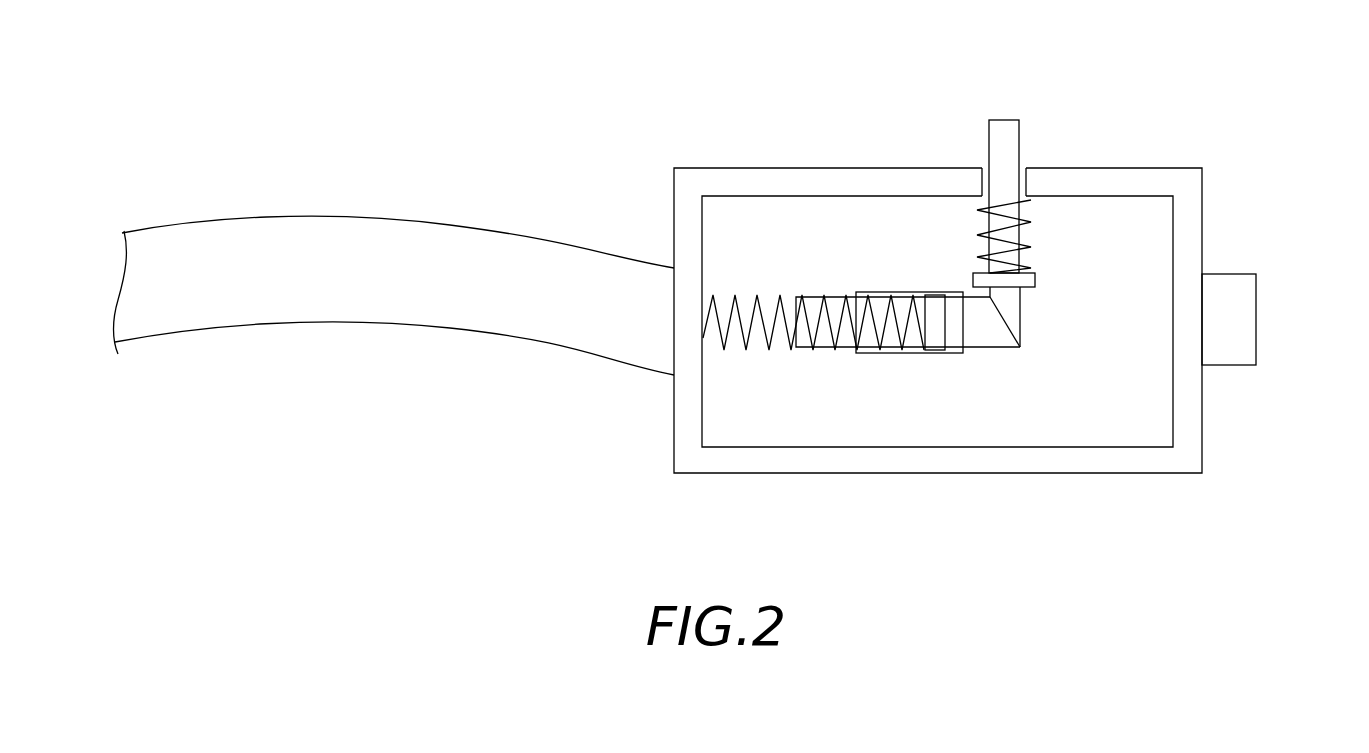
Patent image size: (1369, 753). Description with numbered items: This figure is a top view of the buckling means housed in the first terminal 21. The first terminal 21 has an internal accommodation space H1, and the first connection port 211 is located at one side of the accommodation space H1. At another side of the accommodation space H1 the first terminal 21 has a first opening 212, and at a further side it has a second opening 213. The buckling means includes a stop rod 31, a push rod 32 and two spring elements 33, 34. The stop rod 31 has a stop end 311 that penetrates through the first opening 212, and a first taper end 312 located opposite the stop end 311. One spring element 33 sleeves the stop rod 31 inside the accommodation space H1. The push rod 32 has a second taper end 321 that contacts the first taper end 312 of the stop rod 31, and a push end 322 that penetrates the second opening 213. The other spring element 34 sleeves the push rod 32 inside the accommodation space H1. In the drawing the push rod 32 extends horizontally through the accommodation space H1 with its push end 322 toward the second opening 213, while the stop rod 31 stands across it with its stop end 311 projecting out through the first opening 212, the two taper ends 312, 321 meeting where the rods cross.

The first terminal 21 is at (1130, 167).
The first connection port 211 is at (1243, 323).
The first opening 212 is at (1023, 167).
The second opening 213 is at (893, 355).
The stop rod 31 is at (1028, 193).
The stop end 311 is at (1010, 132).
The first taper end 312 is at (1010, 325).
The push rod 32 is at (817, 298).
The second taper end 321 is at (995, 331).
The push end 322 is at (940, 301).
The spring element 33 is at (1023, 248).
The spring element 34 is at (762, 343).
The accommodation space H1 is at (1075, 428).